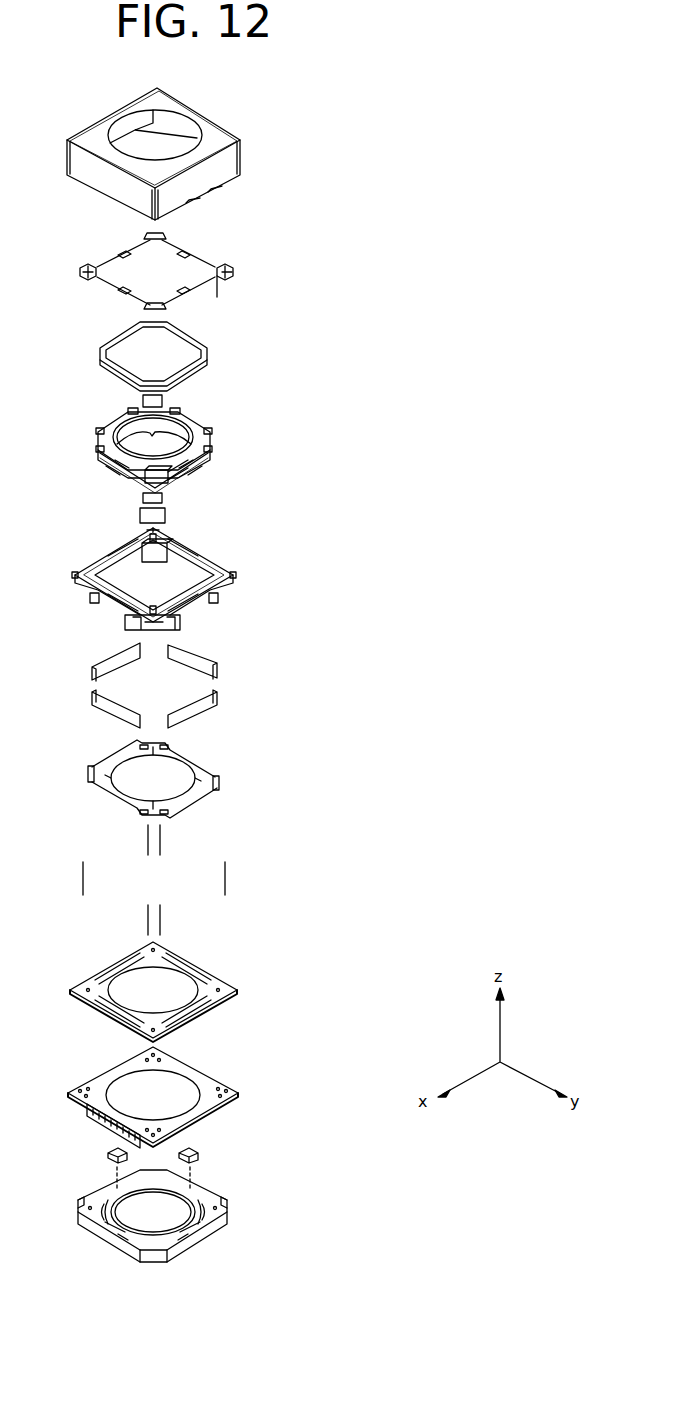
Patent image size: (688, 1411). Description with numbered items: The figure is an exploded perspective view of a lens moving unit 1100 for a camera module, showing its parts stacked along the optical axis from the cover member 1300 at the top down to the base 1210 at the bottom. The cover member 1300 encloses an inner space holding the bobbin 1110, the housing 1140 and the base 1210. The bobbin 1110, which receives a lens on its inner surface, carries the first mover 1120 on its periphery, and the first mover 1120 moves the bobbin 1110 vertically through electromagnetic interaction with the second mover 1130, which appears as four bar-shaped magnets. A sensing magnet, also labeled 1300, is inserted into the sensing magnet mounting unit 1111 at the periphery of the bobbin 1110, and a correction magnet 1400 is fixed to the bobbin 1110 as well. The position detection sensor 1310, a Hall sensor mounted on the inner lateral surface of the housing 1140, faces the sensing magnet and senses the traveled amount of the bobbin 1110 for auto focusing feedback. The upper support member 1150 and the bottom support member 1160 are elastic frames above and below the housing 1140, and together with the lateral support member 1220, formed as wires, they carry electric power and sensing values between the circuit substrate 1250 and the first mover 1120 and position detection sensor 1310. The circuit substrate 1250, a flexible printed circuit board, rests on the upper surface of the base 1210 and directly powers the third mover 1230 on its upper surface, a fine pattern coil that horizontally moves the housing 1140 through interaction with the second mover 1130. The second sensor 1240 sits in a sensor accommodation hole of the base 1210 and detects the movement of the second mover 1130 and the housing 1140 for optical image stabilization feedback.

The lens moving unit 1100 is at (458, 93).
The cover member 1300 is at (238, 157).
The upper support member 1150 is at (230, 272).
The first mover 1120 is at (207, 357).
The correction magnet 1400 is at (142, 399).
The bobbin 1110 is at (208, 443).
The sensing magnet mounting unit 1111 is at (187, 480).
The position detection sensor 1310 is at (138, 517).
The housing 1140 is at (212, 555).
The second mover 1130 is at (217, 663).
The bottom support member 1160 is at (217, 782).
The lateral support member 1220 is at (227, 873).
The third mover 1230 is at (237, 990).
The circuit substrate 1250 is at (238, 1093).
The second sensor 1240 is at (198, 1152).
The base 1210 is at (227, 1202).